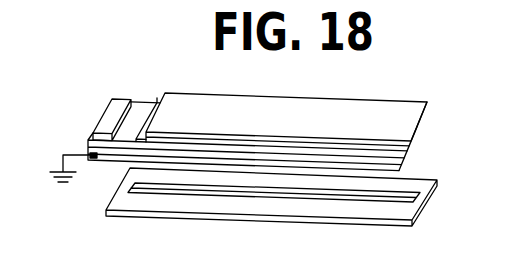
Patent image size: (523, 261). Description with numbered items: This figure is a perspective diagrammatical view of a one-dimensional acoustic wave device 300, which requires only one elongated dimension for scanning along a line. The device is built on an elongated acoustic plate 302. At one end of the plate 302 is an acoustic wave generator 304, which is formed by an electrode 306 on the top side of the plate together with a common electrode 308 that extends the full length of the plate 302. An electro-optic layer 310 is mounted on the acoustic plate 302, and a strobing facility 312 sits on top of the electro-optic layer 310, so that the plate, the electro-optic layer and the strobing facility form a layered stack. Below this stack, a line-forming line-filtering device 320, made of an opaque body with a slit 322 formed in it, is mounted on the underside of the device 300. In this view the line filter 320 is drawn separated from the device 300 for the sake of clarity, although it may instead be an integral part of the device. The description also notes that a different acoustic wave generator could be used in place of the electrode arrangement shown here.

The one-dimensional acoustic wave device 300 is at (253, 126).
The acoustic plate 302 is at (143, 99).
The acoustic wave generator 304 is at (107, 165).
The electrode 306 is at (109, 120).
The common electrode 308 is at (399, 167).
The electro-optic layer 310 is at (157, 103).
The strobing facility 312 is at (284, 108).
The line-forming line-filtering device 320 is at (237, 203).
The slit 322 is at (372, 197).